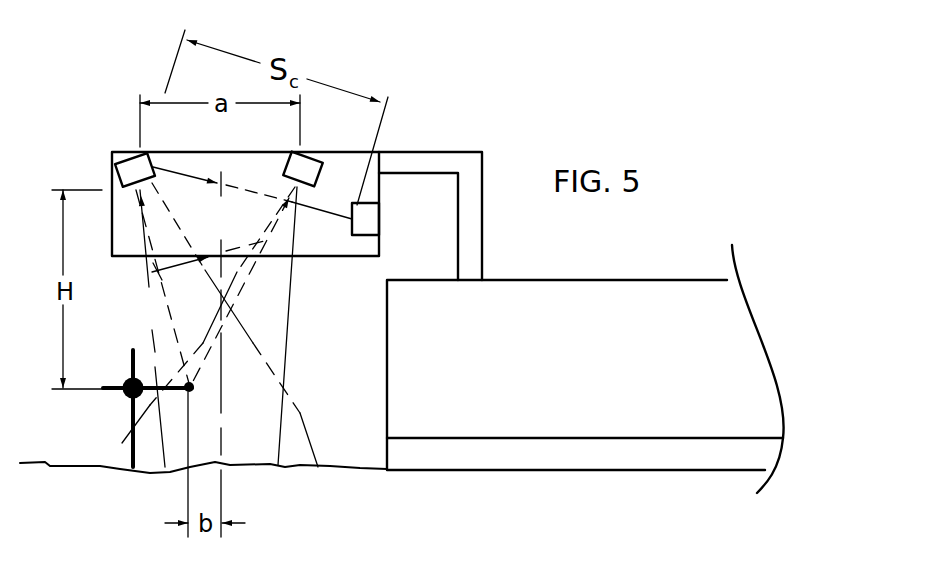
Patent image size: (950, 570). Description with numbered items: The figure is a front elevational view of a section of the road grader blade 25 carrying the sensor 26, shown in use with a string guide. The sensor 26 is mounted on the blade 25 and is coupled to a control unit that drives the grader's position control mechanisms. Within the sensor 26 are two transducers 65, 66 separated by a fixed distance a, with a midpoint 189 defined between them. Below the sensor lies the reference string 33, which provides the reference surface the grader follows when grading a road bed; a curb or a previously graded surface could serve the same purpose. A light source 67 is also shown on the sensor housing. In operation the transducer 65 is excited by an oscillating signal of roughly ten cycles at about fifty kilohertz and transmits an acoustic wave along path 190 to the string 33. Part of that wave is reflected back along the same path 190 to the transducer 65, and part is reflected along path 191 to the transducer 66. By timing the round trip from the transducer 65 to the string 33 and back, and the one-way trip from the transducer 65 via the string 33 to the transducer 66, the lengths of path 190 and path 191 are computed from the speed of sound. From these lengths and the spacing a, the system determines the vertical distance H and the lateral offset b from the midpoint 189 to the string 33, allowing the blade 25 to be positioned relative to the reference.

The road grader blade 25 is at (538, 472).
The sensor 26 is at (377, 151).
The transducer 65 is at (129, 163).
The transducer 66 is at (305, 167).
The light source 67 is at (368, 217).
The midpoint 189 is at (230, 177).
The path 190 is at (167, 300).
The path 191 is at (230, 296).
The reference string 33 is at (197, 386).